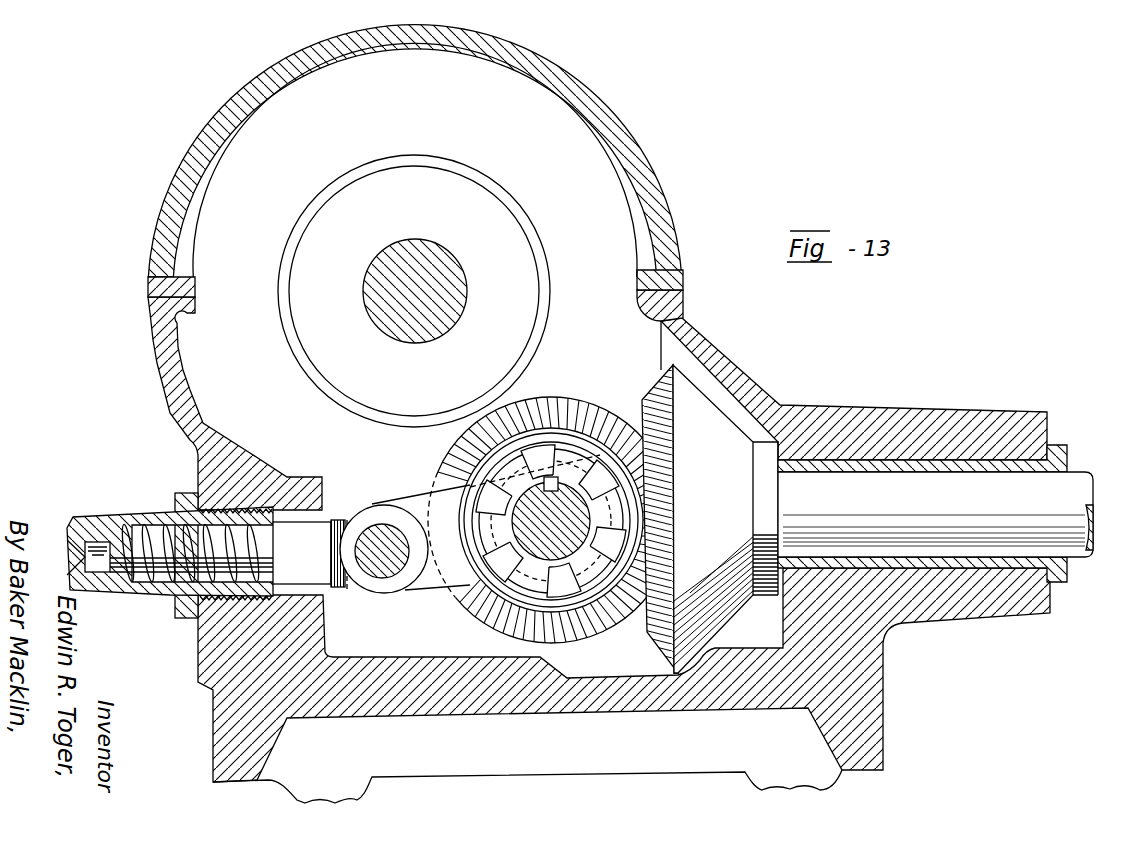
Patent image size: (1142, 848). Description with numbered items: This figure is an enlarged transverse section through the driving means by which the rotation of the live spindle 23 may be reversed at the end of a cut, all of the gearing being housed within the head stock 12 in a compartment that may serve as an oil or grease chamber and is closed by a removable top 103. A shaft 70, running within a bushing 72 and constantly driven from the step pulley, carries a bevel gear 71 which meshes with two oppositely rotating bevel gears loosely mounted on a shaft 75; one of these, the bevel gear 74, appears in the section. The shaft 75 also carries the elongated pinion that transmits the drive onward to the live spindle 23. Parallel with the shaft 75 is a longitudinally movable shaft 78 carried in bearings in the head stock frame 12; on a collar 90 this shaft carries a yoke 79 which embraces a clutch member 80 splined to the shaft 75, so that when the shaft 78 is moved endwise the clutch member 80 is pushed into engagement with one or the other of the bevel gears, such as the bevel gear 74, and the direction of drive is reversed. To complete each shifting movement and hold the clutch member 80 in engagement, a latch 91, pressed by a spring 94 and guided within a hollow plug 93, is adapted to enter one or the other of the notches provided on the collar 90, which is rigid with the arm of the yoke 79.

The head stock 12 is at (865, 680).
The live spindle 23 is at (450, 277).
The shaft 70 is at (1082, 556).
The bevel gear 71 is at (710, 519).
The bushing 72 is at (1065, 452).
The bevel gear 74 is at (598, 618).
The shaft 75 is at (528, 538).
The longitudinally movable shaft 78 is at (373, 567).
The yoke 79 is at (445, 530).
The clutch member 80 is at (560, 580).
The collar 90 is at (378, 510).
The latch 91 is at (330, 520).
The hollow plug 93 is at (85, 520).
The spring 94 is at (175, 505).
The removable top 103 is at (655, 175).